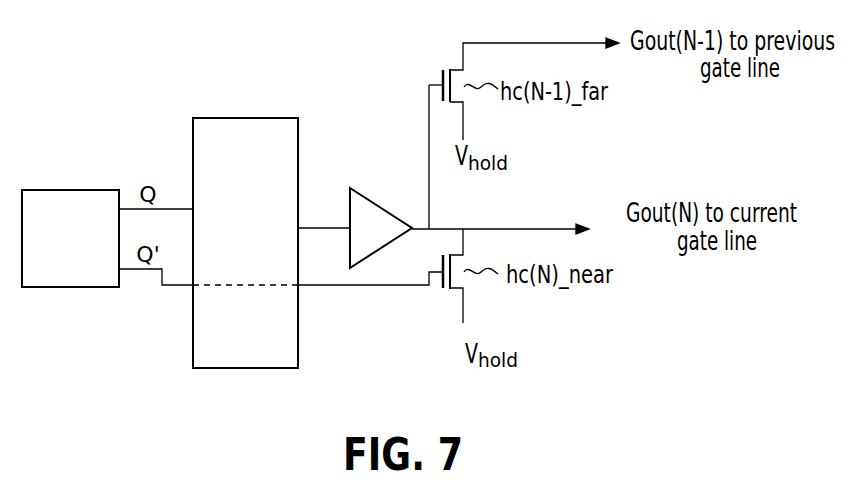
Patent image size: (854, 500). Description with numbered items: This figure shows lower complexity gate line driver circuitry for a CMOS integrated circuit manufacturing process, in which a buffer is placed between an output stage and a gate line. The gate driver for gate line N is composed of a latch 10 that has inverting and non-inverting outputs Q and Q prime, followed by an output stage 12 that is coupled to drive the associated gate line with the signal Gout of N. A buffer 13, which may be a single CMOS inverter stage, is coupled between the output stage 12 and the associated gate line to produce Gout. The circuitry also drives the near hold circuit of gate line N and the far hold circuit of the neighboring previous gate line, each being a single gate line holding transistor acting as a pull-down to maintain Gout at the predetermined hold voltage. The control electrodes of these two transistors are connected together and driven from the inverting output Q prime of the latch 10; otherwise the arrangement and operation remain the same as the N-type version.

The latch 10 is at (100, 189).
The output stage 12 is at (233, 118).
The buffer 13 is at (380, 197).